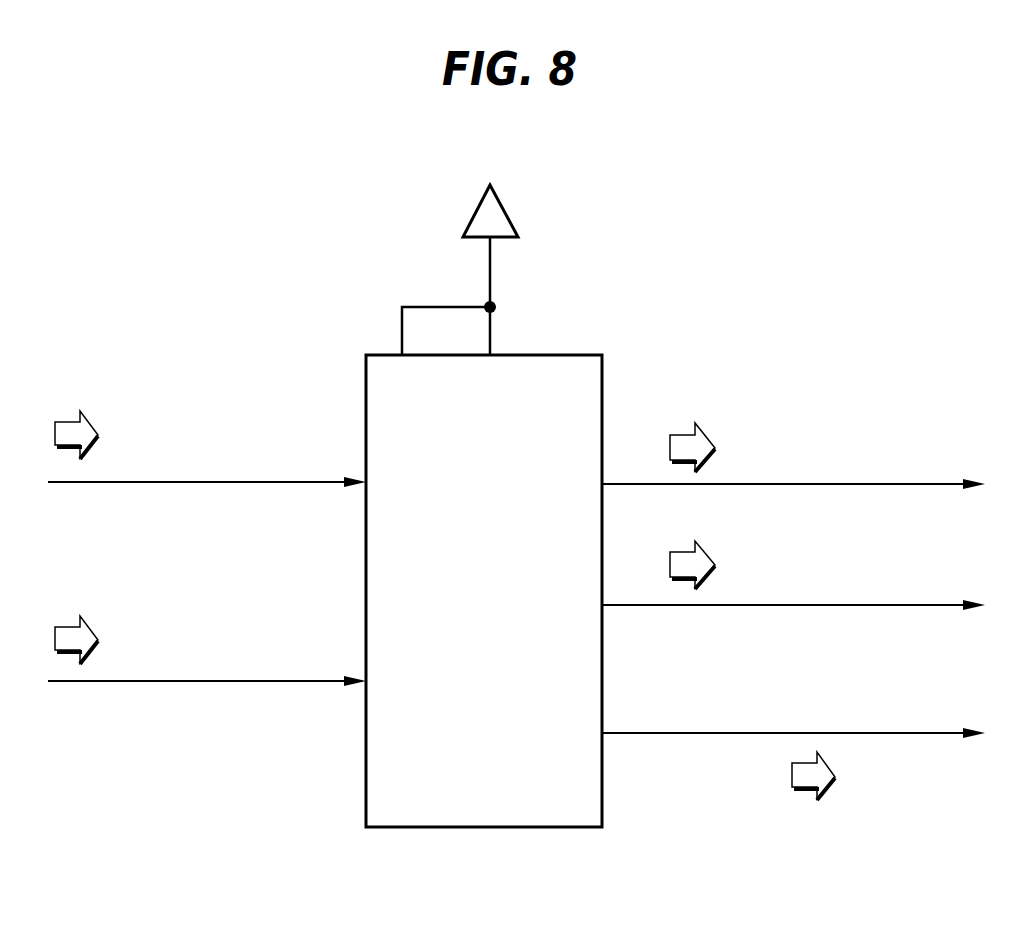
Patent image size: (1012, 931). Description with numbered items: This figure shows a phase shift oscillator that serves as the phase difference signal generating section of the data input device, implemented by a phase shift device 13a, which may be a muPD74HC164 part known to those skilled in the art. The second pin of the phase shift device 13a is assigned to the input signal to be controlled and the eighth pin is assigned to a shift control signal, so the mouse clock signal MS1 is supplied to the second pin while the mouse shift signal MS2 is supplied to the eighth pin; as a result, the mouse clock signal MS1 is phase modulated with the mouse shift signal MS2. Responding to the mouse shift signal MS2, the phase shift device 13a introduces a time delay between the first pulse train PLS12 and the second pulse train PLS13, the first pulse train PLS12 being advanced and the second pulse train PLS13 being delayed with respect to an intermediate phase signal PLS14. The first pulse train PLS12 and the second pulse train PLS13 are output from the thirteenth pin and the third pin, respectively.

The phase shift device 13a is at (586, 355).
The mouse clock signal MS1 is at (92, 422).
The mouse shift signal MS2 is at (92, 628).
The second pulse train PLS13 is at (703, 433).
The first pulse train PLS12 is at (706, 553).
The intermediate phase signal PLS14 is at (793, 787).